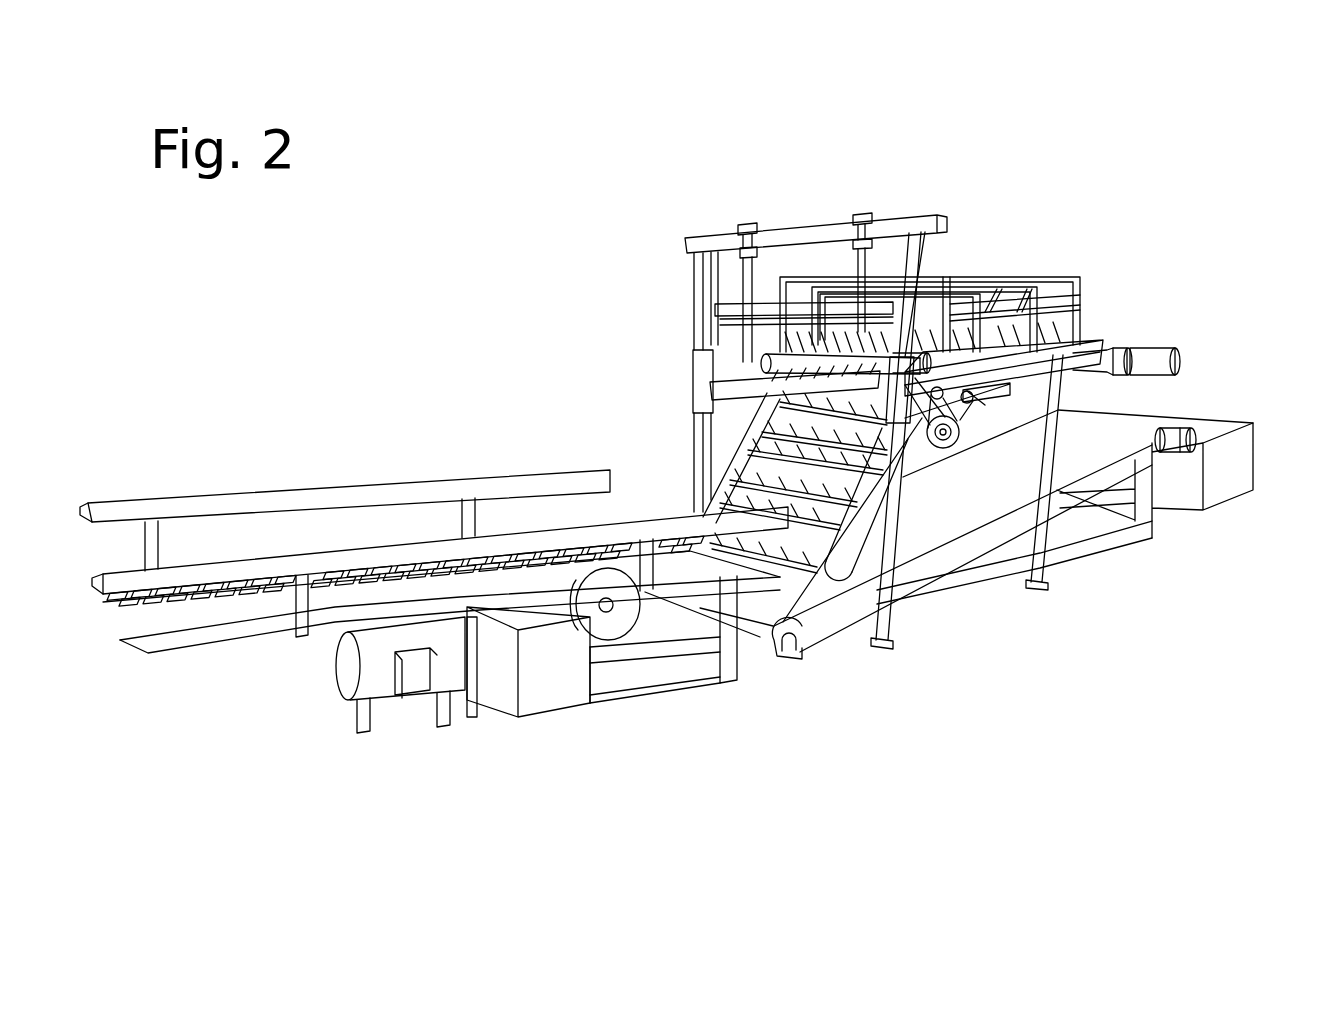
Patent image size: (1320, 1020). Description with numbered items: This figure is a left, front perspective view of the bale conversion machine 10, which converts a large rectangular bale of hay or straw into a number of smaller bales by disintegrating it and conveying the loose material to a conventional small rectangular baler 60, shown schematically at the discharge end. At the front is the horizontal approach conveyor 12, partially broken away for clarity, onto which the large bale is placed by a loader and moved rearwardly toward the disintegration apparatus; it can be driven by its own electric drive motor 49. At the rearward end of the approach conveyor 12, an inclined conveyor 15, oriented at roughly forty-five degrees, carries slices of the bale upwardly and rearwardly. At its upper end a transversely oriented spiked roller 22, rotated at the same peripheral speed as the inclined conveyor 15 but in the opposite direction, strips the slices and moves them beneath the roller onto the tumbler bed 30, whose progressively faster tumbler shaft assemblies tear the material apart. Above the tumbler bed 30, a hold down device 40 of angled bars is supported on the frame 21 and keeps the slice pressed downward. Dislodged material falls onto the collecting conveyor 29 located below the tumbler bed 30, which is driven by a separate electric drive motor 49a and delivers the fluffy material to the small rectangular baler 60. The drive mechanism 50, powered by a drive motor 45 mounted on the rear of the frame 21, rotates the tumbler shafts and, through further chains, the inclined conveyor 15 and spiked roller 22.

The bale conversion machine 10 is at (899, 183).
The approach conveyor 12 is at (218, 484).
The inclined conveyor 15 is at (750, 463).
The frame 21 is at (727, 232).
The spiked roller 22 is at (763, 357).
The collecting conveyor 29 is at (948, 520).
The tumbler bed 30 is at (1083, 318).
The hold down device 40 is at (985, 252).
The drive motor 45 is at (1150, 357).
The drive motor 49 is at (350, 668).
The drive motor 49a is at (1173, 427).
The drive mechanism 50 is at (986, 422).
The small rectangular baler 60 is at (1190, 512).